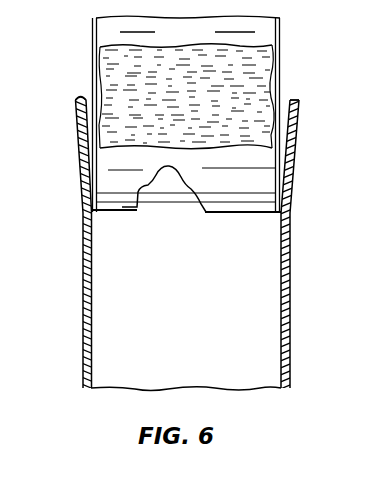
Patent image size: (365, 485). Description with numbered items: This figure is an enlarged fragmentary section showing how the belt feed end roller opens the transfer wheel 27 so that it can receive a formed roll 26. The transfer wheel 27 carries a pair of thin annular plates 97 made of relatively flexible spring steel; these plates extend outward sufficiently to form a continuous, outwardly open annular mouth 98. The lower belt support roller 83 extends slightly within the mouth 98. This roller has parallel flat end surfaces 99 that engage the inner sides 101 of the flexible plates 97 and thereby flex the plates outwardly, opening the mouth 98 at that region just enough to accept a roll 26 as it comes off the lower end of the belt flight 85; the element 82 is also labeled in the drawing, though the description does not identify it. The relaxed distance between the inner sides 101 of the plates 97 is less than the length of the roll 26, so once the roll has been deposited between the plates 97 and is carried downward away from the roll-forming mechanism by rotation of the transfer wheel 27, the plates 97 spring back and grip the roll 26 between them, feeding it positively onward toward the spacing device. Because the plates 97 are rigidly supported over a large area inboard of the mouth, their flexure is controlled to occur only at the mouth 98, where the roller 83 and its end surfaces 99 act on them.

The transfer wheel 27 is at (202, 250).
The thin annular plates 97 is at (83, 290).
The inner sides of the flexible plates 101 is at (74, 100).
The annular mouth 98 is at (289, 112).
The parallel flat end surfaces 99 is at (82, 158).
The liner 82 is at (278, 32).
The belt flight 85 is at (283, 177).
The lower belt support roller 83 is at (157, 198).
The roll 26 is at (238, 124).